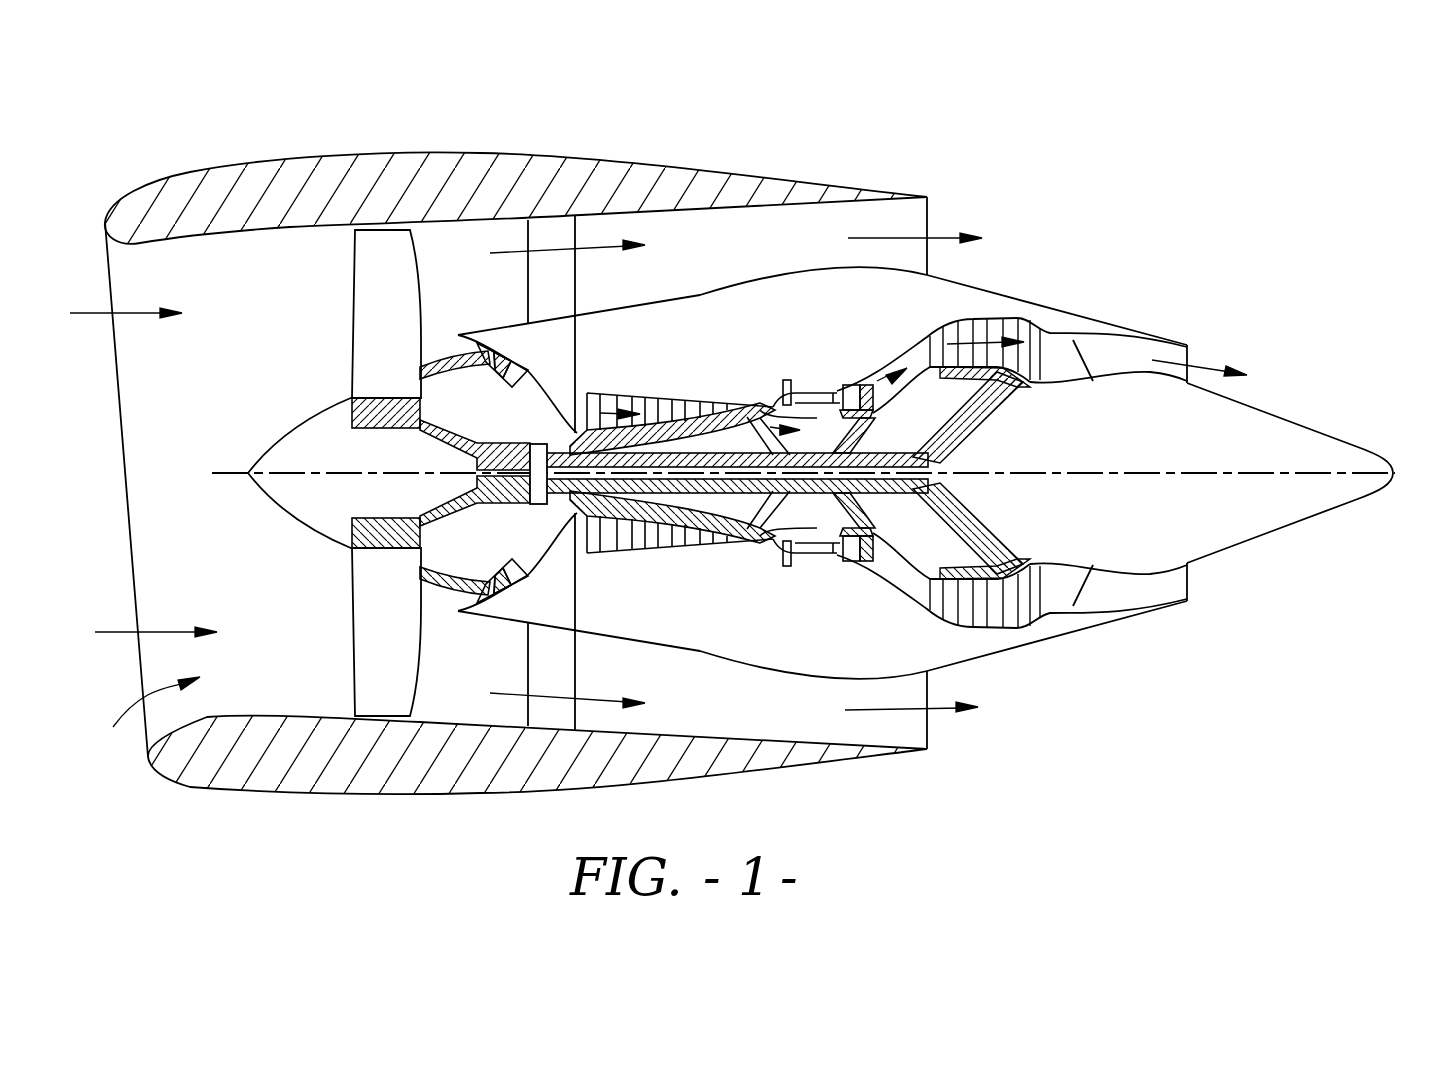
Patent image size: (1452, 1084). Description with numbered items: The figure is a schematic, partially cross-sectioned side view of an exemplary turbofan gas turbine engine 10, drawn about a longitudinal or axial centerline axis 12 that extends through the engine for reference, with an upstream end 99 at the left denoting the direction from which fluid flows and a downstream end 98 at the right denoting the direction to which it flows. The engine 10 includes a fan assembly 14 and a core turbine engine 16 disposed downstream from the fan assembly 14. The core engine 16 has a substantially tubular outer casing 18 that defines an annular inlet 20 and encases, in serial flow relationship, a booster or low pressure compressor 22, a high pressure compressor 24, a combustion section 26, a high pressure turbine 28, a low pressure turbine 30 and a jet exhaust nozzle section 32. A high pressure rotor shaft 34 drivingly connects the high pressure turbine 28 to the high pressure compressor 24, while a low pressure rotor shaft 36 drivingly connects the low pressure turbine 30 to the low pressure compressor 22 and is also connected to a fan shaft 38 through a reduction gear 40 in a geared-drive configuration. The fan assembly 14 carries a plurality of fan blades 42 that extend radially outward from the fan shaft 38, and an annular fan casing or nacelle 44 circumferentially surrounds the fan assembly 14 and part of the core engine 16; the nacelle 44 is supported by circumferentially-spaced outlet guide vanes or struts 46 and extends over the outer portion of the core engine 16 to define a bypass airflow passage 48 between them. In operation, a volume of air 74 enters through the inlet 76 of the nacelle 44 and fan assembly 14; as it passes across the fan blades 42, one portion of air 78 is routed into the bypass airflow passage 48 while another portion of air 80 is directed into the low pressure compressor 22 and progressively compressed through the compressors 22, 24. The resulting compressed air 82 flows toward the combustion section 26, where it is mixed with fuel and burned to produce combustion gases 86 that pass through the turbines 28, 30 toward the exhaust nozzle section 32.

The gas turbine engine 10 is at (1178, 228).
The longitudinal centerline axis 12 is at (1105, 470).
The fan assembly 14 is at (457, 250).
The core turbine engine 16 is at (792, 270).
The outer casing 18 is at (760, 672).
The annular inlet 20 is at (462, 598).
The low pressure compressor 22 is at (537, 563).
The high pressure compressor 24 is at (608, 543).
The combustion section 26 is at (807, 547).
The high pressure turbine 28 is at (868, 553).
The low pressure turbine 30 is at (1013, 633).
The jet exhaust nozzle section 32 is at (1103, 600).
The high pressure rotor shaft 34 is at (860, 440).
The low pressure rotor shaft 36 is at (967, 433).
The fan shaft 38 is at (422, 440).
The reduction gear 40 is at (535, 445).
The fan blades 42 is at (370, 307).
The nacelle 44 is at (365, 158).
The outlet guide vanes 46 is at (558, 232).
The bypass airflow passage 48 is at (723, 262).
The air 74 is at (142, 313).
The inlet 76 is at (142, 721).
The bypass air 78 is at (590, 253).
The core air 80 is at (441, 350).
The compressed air 82 is at (593, 407).
The combustion gases 86 is at (857, 405).
The downstream end 98 is at (1438, 487).
The upstream end 99 is at (98, 487).